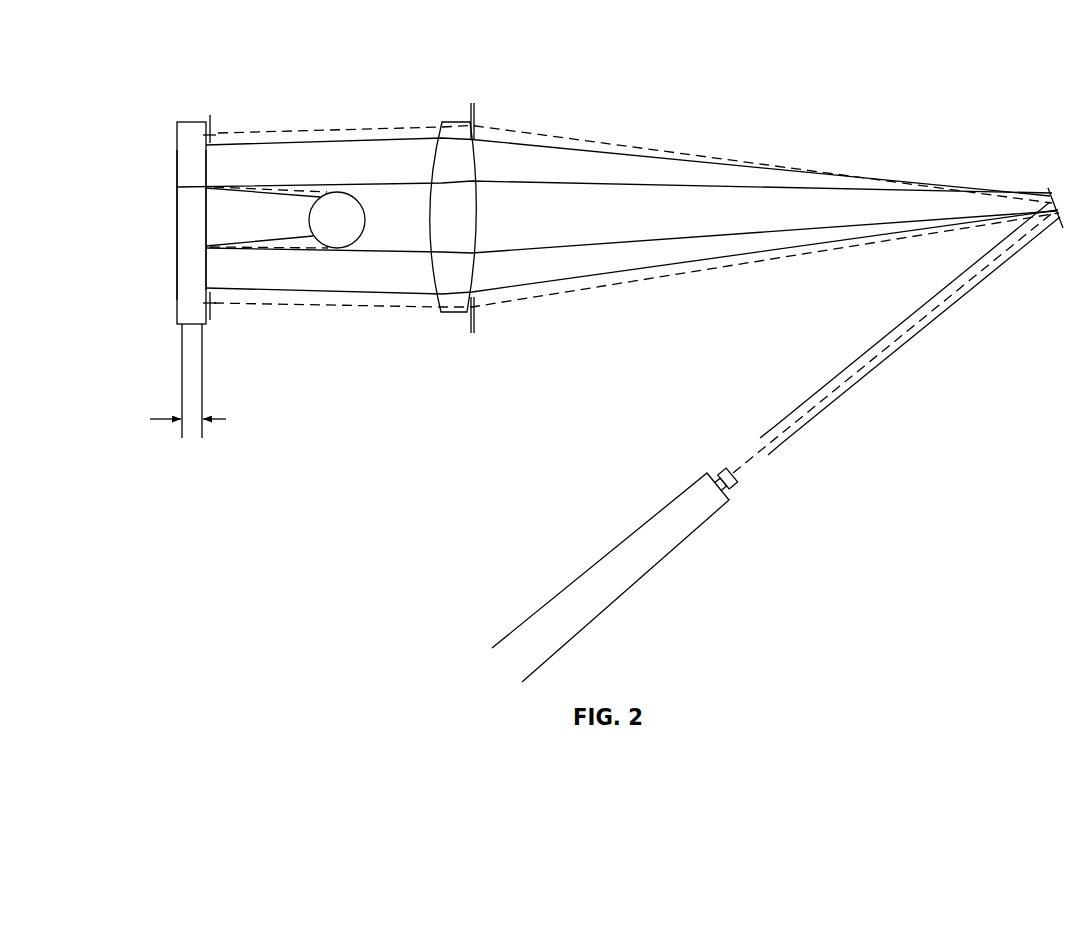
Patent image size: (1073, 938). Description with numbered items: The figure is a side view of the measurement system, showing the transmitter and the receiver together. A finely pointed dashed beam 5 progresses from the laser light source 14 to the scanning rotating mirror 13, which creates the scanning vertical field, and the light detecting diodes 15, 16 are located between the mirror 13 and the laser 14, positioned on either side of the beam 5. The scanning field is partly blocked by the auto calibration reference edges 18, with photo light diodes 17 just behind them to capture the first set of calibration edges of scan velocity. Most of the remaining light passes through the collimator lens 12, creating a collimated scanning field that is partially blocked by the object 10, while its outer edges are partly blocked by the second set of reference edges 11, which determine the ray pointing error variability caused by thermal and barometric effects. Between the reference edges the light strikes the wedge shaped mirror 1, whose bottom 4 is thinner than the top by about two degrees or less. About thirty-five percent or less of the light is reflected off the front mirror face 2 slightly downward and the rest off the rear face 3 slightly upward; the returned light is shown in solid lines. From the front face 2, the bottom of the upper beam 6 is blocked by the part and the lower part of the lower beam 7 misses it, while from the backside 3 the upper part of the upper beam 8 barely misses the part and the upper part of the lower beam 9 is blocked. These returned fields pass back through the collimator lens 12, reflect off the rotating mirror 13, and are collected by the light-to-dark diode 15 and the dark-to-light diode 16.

The detector 1 is at (195, 118).
The front mirror face 2 is at (208, 210).
The rear face 3 is at (176, 251).
The bottom 4 is at (197, 419).
The beam 5 is at (294, 183).
The upper beam 6 is at (288, 202).
The lower beam 7 is at (378, 257).
The upper beam 8 is at (397, 177).
The lower beam 9 is at (278, 244).
The object 10 is at (348, 189).
The second set of reference edges 11 is at (216, 117).
The collimator lens 12 is at (480, 164).
The scanning rotating mirror 13 is at (1058, 224).
The laser light source 14 is at (646, 549).
The light detecting diode 15 is at (756, 437).
The light detecting diode 16 is at (770, 457).
The photo light diodes 17 is at (469, 111).
The auto calibration reference edges 18 is at (482, 113).